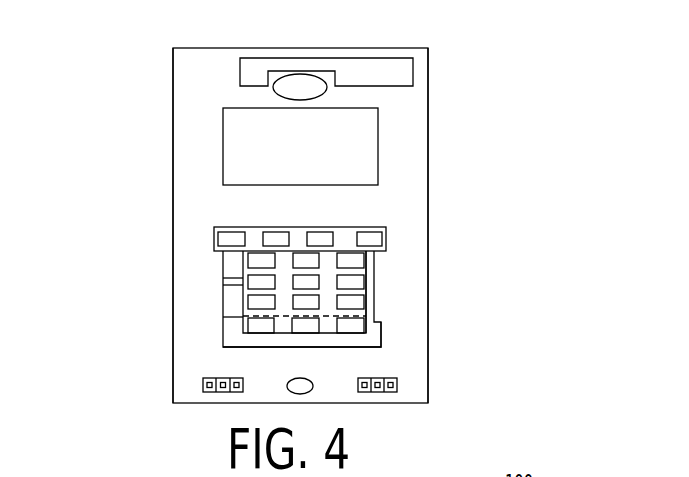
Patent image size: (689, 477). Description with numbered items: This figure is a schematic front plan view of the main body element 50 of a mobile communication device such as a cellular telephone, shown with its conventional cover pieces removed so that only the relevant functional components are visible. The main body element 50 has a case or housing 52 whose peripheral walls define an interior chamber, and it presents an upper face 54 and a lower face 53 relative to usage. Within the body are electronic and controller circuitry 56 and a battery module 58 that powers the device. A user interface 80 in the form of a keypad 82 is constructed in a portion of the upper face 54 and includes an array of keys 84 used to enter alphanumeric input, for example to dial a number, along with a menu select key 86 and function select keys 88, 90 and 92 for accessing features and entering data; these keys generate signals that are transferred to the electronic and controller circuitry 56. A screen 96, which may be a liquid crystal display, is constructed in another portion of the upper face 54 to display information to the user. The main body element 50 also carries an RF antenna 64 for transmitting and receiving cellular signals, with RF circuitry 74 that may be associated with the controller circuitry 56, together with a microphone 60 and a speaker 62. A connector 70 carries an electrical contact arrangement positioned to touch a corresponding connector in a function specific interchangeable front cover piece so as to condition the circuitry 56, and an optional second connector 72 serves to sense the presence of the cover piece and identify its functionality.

The main body element 50 is at (512, 99).
The housing 52 is at (172, 83).
The lower face 53 is at (431, 108).
The upper face 54 is at (187, 180).
The electronic and controller circuitry 56 is at (388, 268).
The battery module 58 is at (384, 337).
The microphone 60 is at (313, 383).
The speaker 62 is at (305, 73).
The RF antenna 64 is at (403, 70).
The connector 70 is at (202, 382).
The second connector 72 is at (404, 387).
The RF circuitry 74 is at (222, 296).
The user interface 80 is at (390, 248).
The keypad 82 is at (370, 287).
The keys 84 is at (263, 262).
The menu select key 86 is at (233, 240).
The function select key 88 is at (257, 222).
The function select key 90 is at (325, 234).
The function select key 92 is at (375, 233).
The screen 96 is at (389, 155).